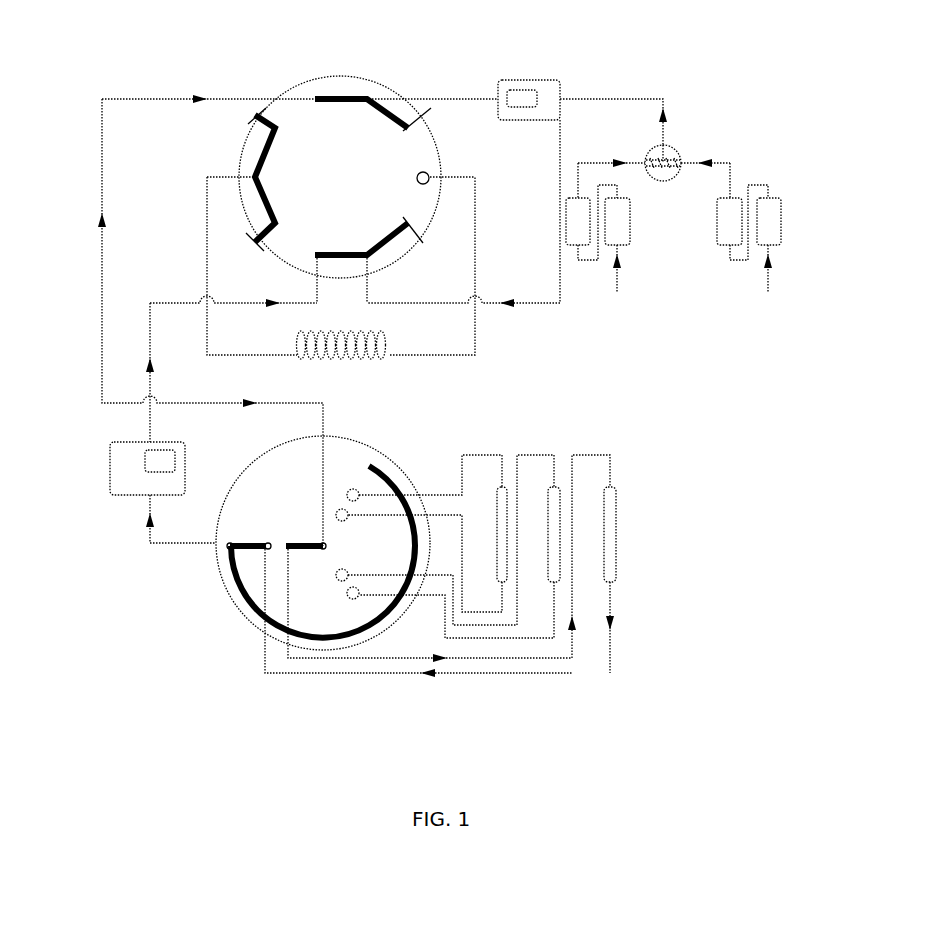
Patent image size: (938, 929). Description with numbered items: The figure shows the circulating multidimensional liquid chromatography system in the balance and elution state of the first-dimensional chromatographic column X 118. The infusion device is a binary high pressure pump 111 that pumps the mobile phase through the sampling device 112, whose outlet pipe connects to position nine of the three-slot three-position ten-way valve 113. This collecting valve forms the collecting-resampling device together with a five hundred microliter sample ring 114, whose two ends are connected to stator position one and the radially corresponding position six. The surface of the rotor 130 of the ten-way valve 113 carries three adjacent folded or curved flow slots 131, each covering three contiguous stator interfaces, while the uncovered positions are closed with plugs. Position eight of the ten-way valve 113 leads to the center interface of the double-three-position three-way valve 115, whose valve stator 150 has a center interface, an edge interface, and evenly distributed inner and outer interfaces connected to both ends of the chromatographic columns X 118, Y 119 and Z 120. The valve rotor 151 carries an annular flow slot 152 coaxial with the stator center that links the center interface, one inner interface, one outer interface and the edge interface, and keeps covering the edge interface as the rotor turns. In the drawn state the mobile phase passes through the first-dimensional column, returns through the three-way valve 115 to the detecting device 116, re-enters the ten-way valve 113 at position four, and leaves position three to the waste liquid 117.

The binary high pressure pump 111 is at (728, 222).
The sampling device 112 is at (540, 88).
The three-slot three-position ten-way valve 113 is at (293, 88).
The sample ring 114 is at (390, 355).
The double-three-position three-way valve 115 is at (318, 607).
The detecting device 116 is at (145, 470).
The waste liquid 117 is at (507, 303).
The chromatographic column X 118 is at (616, 540).
The chromatographic column Y 119 is at (550, 500).
The chromatographic column Z 120 is at (497, 510).
The rotor 130 is at (308, 127).
The flow slot 131 is at (345, 97).
The valve stator 150 is at (218, 558).
The valve rotor 151 is at (250, 577).
The annular flow slot 152 is at (337, 638).